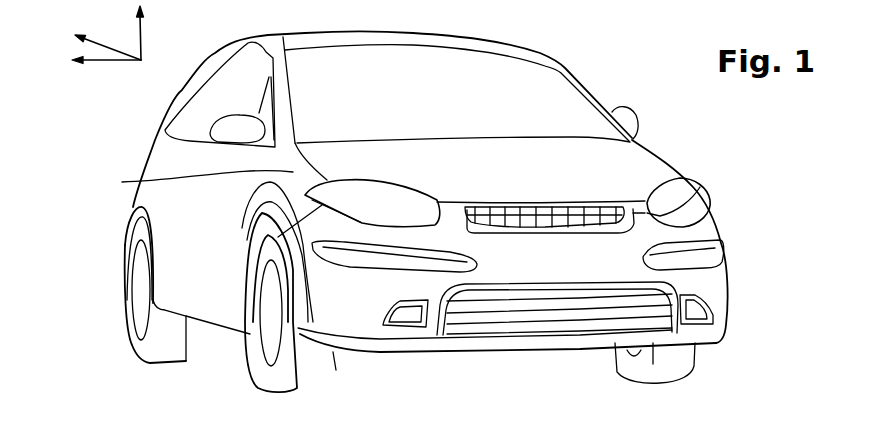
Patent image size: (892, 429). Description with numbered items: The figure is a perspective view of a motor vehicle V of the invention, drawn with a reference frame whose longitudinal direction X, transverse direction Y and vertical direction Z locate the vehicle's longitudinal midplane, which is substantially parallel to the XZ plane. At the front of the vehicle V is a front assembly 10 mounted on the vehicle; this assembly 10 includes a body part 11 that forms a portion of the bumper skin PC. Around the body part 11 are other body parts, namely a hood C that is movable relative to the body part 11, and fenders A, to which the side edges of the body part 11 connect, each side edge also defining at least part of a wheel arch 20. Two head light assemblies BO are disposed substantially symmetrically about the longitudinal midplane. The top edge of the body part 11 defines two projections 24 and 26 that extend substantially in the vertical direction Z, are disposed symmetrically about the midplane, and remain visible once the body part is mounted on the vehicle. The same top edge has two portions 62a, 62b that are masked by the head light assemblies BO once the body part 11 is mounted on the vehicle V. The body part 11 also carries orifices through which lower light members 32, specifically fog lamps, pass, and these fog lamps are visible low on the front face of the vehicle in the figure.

The front assembly 10 is at (774, 275).
The body part 11 is at (709, 228).
The wheel arch 20 is at (278, 286).
The projection 24 is at (452, 213).
The projection 26 is at (700, 186).
The lower light members 32 is at (411, 326).
The portion of the top edge 62a is at (712, 202).
The portion of the top edge 62b is at (358, 220).
The fender A is at (198, 180).
The head light assembly BO is at (378, 207).
The hood C is at (565, 155).
The bumper skin PC is at (753, 324).
The motor vehicle V is at (115, 126).
The longitudinal direction X is at (108, 36).
The transverse direction Y is at (97, 59).
The vertical direction Z is at (151, 30).